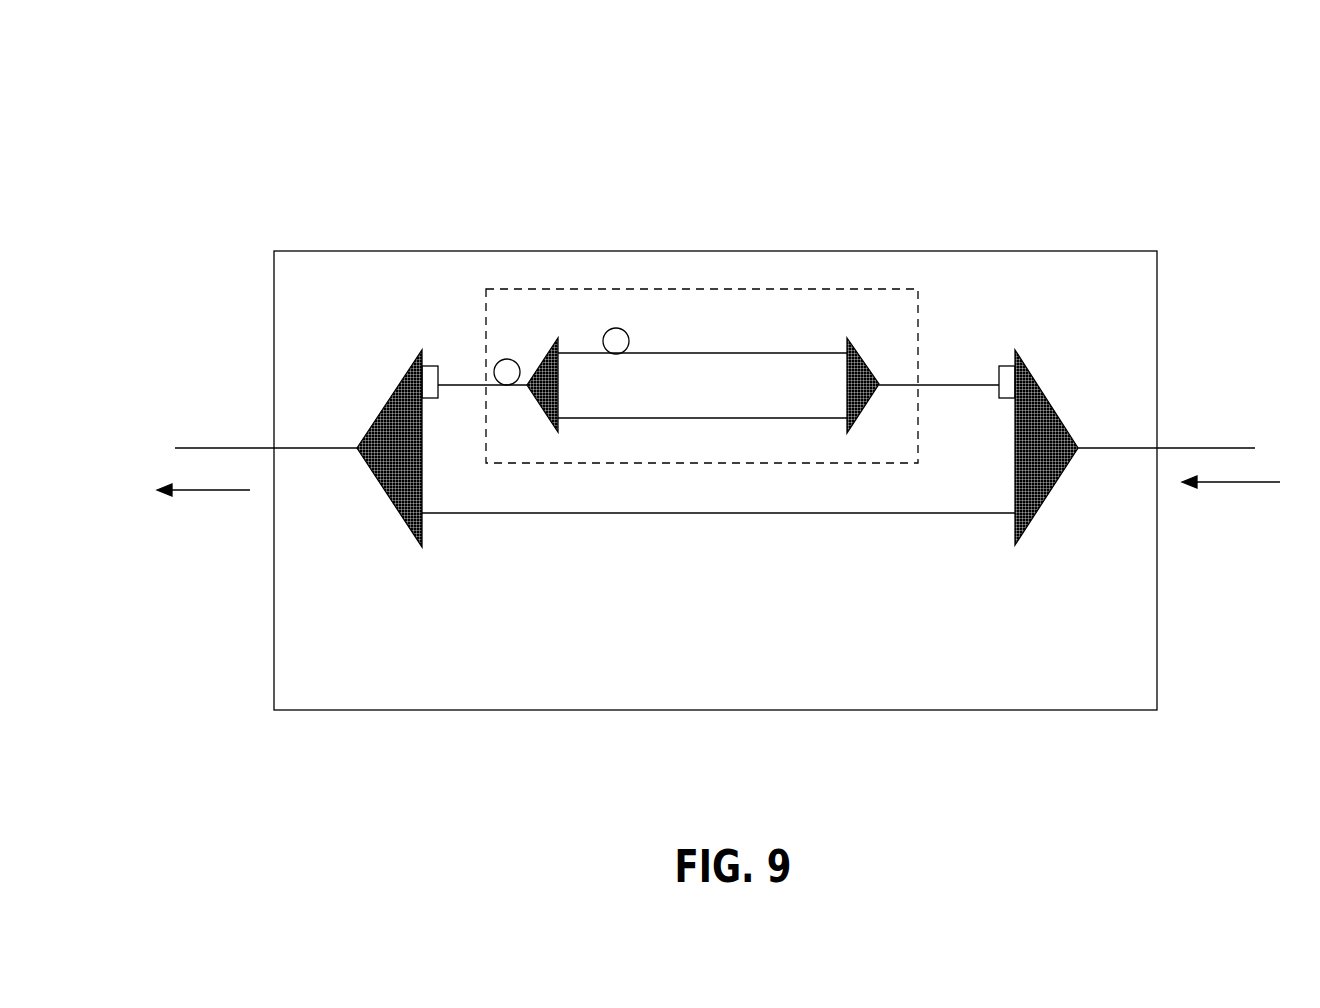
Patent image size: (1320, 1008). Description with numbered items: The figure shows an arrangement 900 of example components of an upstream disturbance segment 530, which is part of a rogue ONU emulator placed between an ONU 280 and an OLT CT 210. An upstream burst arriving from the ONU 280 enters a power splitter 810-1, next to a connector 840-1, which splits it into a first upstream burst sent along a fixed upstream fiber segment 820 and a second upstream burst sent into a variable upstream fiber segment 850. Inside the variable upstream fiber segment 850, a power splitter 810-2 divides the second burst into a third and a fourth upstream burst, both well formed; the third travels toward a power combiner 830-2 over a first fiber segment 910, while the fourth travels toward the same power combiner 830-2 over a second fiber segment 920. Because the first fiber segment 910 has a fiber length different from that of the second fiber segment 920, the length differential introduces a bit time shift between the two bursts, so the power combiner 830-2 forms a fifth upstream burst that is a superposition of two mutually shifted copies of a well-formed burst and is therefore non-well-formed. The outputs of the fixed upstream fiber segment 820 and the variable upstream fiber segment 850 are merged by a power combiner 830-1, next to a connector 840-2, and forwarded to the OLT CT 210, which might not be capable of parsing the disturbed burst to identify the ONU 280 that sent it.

The upstream signal path configuration 900 is at (250, 49).
The upstream disturbance segment 530 is at (404, 250).
The variable upstream fiber segment 850 is at (632, 287).
The OLT CT 210 is at (187, 555).
The ONU 280 is at (1212, 543).
The power combiner 830-1 is at (393, 507).
The power combiner 830-2 is at (580, 326).
The power splitter 810-1 is at (1022, 532).
The power splitter 810-2 is at (866, 357).
The connector 840-1 is at (1008, 365).
The connector 840-2 is at (428, 365).
The first fiber segment 910 is at (730, 352).
The second fiber segment 920 is at (763, 417).
The fixed upstream fiber segment 820 is at (716, 520).